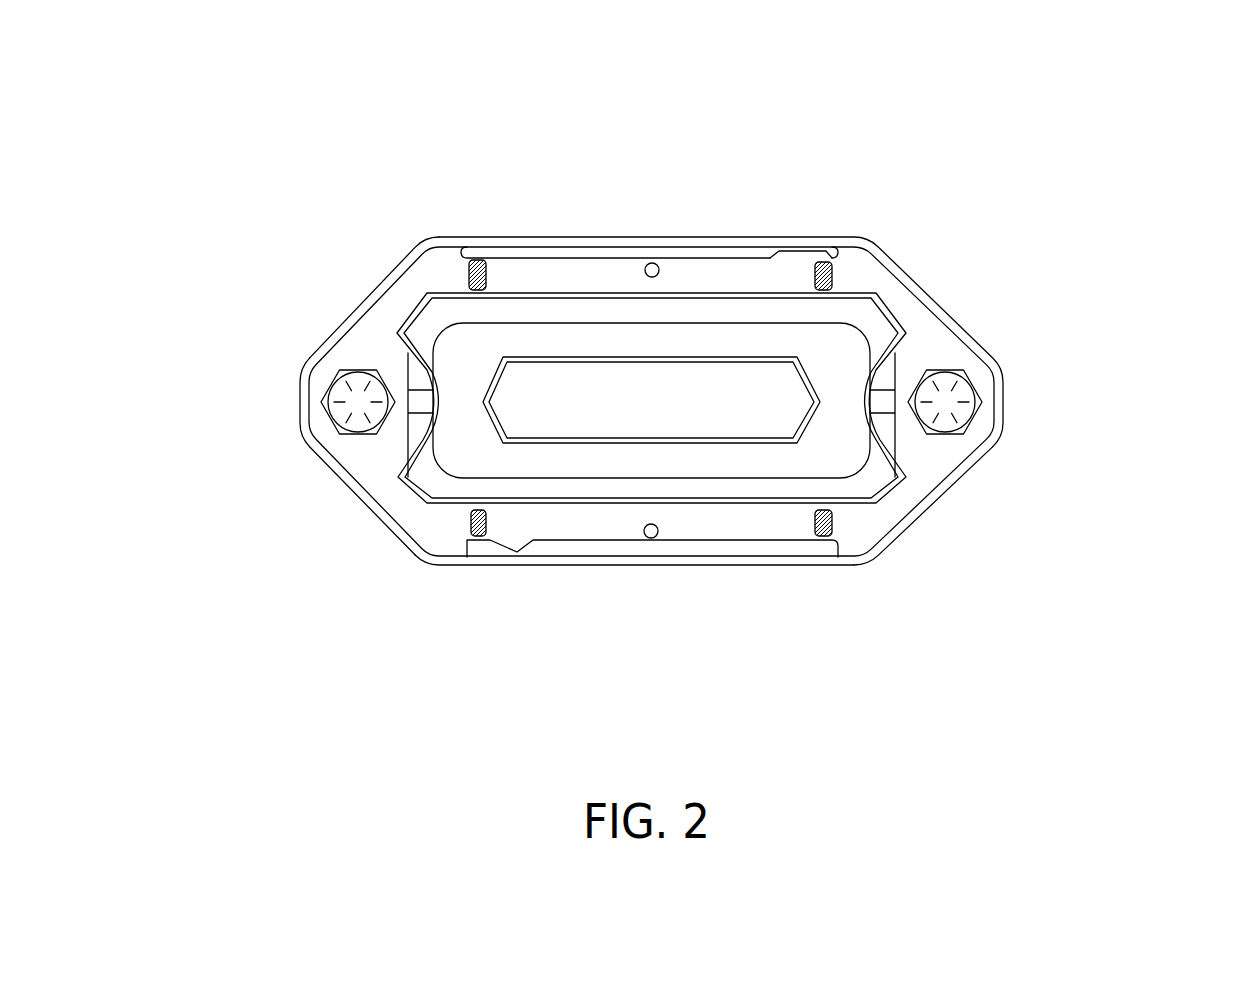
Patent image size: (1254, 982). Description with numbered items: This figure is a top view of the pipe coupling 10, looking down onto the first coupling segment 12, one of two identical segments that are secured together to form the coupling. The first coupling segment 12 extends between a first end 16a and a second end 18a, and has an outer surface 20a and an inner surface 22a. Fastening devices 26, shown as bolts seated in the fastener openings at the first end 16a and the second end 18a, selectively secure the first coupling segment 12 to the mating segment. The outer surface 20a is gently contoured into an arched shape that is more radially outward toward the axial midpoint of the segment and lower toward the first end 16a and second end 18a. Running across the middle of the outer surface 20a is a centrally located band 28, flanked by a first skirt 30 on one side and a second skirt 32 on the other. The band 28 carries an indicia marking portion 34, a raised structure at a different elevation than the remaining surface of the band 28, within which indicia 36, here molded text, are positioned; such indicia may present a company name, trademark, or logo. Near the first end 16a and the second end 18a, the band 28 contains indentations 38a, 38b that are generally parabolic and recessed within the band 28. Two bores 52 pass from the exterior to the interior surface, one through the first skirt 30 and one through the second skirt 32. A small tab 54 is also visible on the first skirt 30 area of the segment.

The pipe coupling 10 is at (1116, 451).
The first coupling segment 12 is at (880, 278).
The first end 16a is at (343, 450).
The second end 18a is at (915, 503).
The outer surface 20a is at (437, 283).
The inner surface 22a is at (428, 533).
The fastening device 26 is at (333, 373).
The centrally located band 28 is at (457, 345).
The first skirt 30 is at (570, 527).
The second skirt 32 is at (547, 280).
The indicia marking portion 34 is at (828, 353).
The indicia 36 is at (713, 432).
The indentation 38a is at (423, 340).
The indentation 38b is at (897, 363).
The bore 52 is at (660, 252).
The tab 54 is at (752, 235).